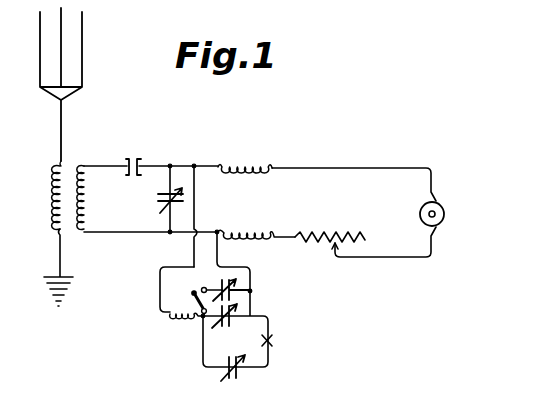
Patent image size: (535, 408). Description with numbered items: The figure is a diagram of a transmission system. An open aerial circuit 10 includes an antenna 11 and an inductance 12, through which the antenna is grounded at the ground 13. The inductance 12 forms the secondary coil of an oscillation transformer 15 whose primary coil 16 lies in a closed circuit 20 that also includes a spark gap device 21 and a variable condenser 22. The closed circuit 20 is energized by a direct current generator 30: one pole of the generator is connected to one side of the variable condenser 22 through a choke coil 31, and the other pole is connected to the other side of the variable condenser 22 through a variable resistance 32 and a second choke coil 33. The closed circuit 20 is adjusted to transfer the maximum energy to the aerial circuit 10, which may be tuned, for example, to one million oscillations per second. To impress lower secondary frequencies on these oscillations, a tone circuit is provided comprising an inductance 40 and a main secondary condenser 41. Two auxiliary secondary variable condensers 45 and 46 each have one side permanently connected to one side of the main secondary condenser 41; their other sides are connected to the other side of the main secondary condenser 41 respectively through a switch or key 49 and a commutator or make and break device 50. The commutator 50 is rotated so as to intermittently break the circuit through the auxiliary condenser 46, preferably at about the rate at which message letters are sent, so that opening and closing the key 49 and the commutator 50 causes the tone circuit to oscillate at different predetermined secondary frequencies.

The open aerial circuit 10 is at (69, 198).
The antenna 11 is at (57, 133).
The inductance 12 is at (54, 206).
The ground 13 is at (46, 287).
The oscillation transformer 15 is at (63, 163).
The primary coil 16 is at (84, 193).
The closed circuit 20 is at (109, 218).
The spark gap device 21 is at (134, 159).
The variable condenser 22 is at (158, 201).
The direct current generator 30 is at (444, 218).
The choke coil 31 is at (244, 167).
The variable resistance 32 is at (330, 226).
The choke coil 33 is at (249, 233).
The inductance 40 is at (183, 328).
The main secondary condenser 41 is at (240, 312).
The auxiliary secondary variable condenser 45 is at (229, 279).
The auxiliary secondary variable condenser 46 is at (232, 378).
The switch or key 49 is at (190, 293).
The commutator 50 is at (274, 341).